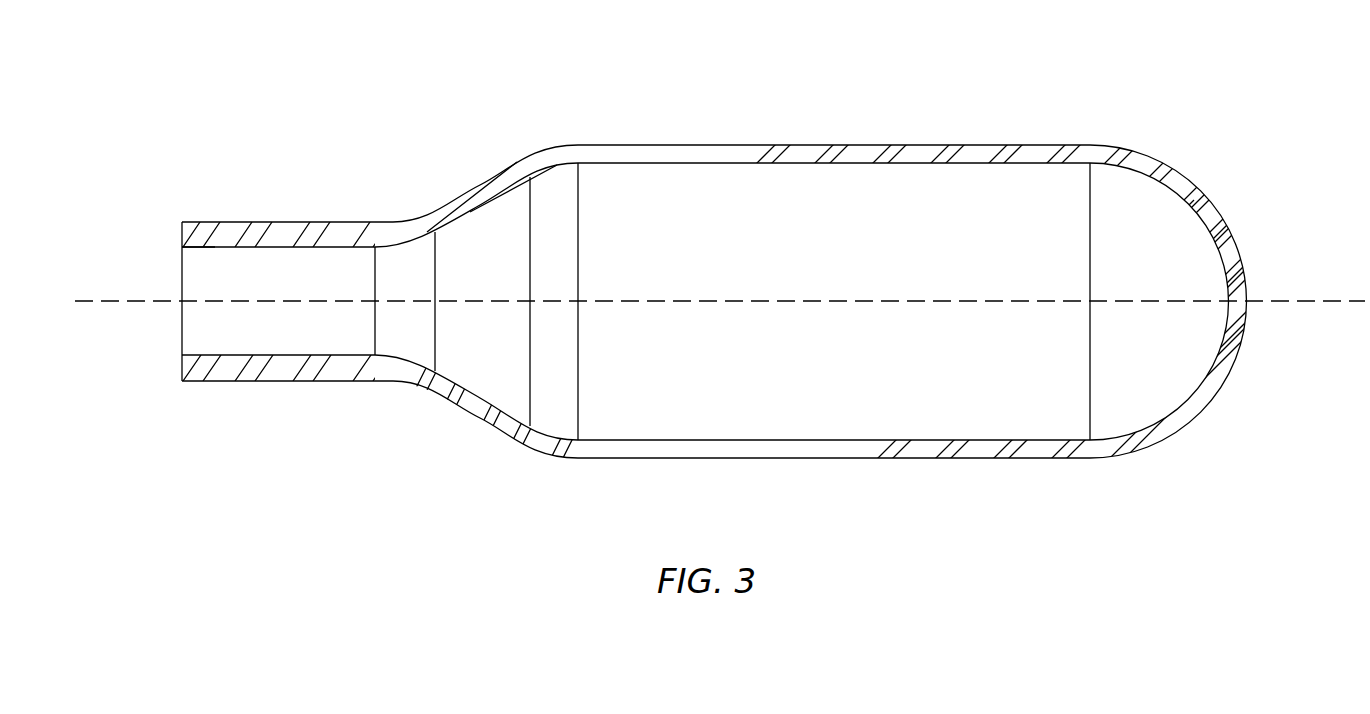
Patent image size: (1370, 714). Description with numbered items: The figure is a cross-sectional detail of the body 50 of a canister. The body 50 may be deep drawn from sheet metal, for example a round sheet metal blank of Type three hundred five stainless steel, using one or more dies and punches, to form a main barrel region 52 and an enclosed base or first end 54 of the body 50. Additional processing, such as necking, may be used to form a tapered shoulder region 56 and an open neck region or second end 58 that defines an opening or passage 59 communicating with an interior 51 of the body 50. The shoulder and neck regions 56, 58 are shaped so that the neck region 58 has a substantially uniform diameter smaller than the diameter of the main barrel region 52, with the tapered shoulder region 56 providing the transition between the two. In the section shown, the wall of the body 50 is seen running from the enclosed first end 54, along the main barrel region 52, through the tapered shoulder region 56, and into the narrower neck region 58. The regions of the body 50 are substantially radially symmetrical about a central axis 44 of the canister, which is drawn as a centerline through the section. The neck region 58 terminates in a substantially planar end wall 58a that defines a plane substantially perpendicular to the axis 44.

The central axis 44 is at (130, 301).
The body 50 is at (1031, 138).
The interior 51 is at (843, 258).
The main barrel region 52 is at (789, 144).
The first end 54 is at (1182, 168).
The tapered shoulder region 56 is at (491, 175).
The neck region 58 is at (243, 247).
The end wall 58a is at (181, 232).
The passage 59 is at (214, 247).